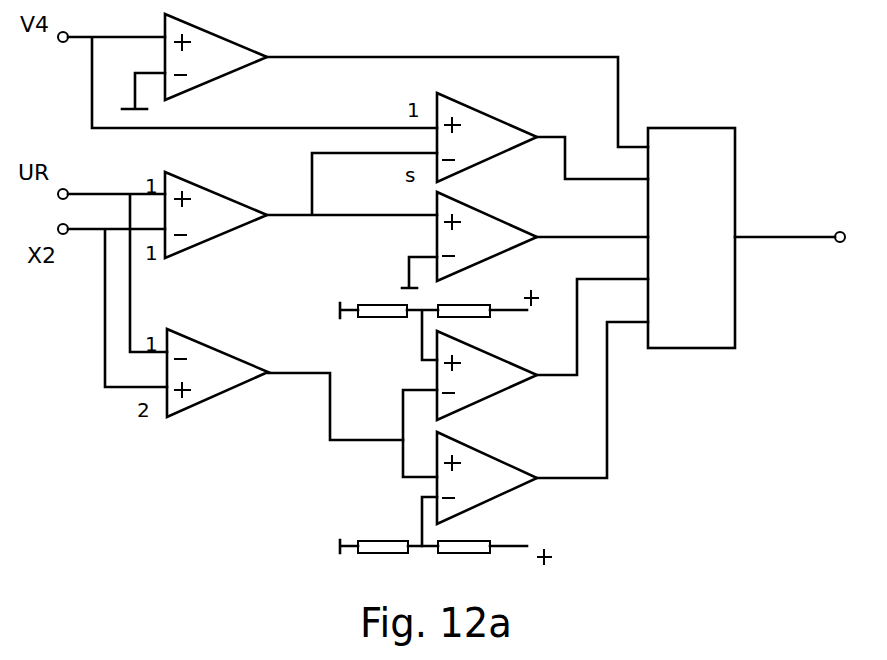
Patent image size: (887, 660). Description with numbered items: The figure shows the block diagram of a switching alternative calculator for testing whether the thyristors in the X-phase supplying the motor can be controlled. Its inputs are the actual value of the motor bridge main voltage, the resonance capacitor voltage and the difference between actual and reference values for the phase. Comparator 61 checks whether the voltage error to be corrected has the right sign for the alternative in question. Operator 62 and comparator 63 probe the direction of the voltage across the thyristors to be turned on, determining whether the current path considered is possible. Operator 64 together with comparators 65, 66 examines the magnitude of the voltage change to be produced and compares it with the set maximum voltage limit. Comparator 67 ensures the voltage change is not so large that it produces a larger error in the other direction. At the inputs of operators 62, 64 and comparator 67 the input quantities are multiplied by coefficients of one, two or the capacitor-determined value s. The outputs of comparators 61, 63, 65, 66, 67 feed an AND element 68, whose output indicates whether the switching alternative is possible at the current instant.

The comparator 61 is at (217, 31).
The operator 62 is at (222, 193).
The comparator 63 is at (522, 223).
The operator 64 is at (222, 350).
The comparator 65 is at (487, 399).
The comparator 66 is at (508, 495).
The comparator 67 is at (505, 118).
The AND element 68 is at (703, 127).